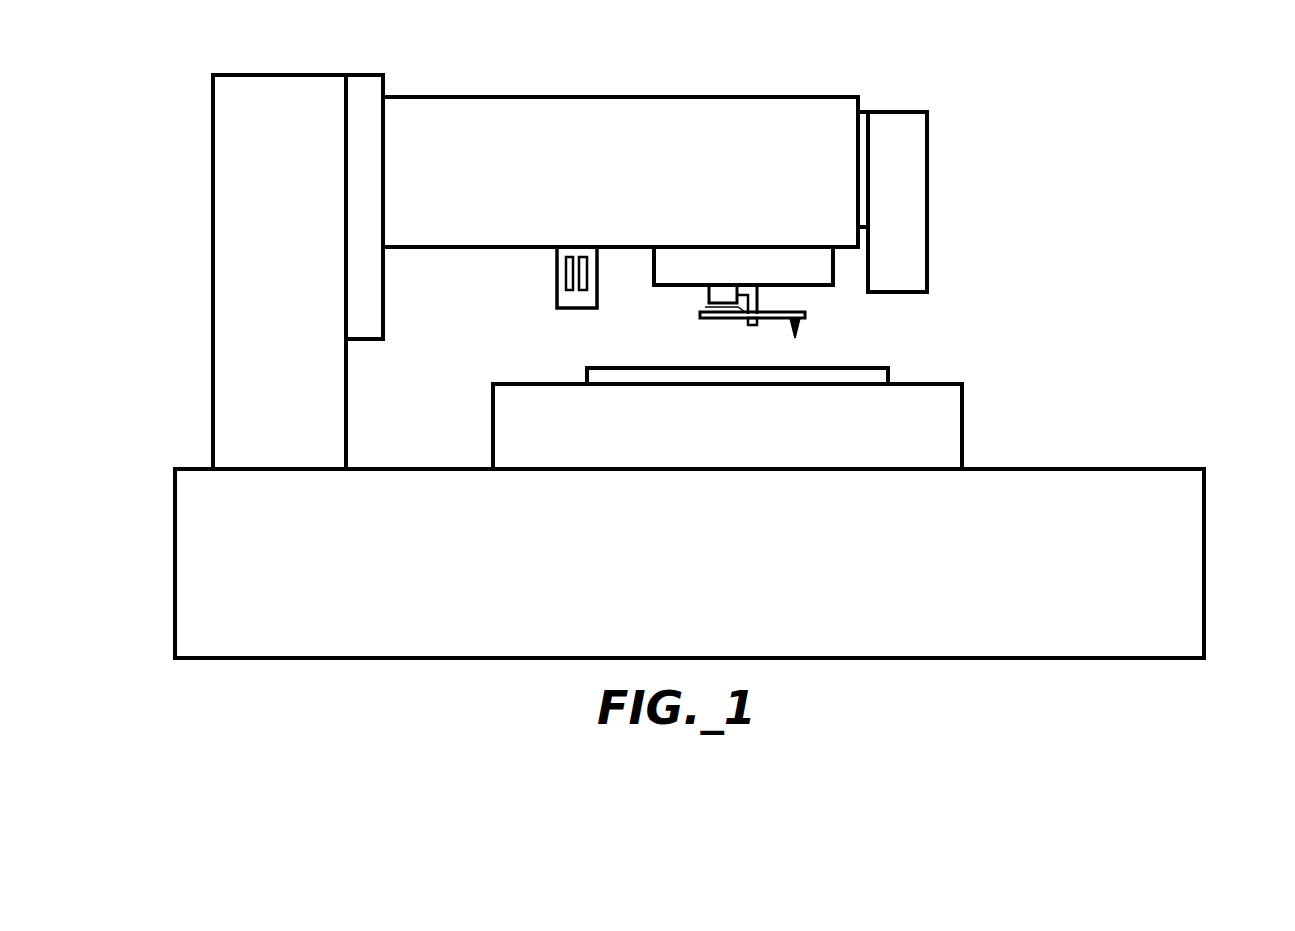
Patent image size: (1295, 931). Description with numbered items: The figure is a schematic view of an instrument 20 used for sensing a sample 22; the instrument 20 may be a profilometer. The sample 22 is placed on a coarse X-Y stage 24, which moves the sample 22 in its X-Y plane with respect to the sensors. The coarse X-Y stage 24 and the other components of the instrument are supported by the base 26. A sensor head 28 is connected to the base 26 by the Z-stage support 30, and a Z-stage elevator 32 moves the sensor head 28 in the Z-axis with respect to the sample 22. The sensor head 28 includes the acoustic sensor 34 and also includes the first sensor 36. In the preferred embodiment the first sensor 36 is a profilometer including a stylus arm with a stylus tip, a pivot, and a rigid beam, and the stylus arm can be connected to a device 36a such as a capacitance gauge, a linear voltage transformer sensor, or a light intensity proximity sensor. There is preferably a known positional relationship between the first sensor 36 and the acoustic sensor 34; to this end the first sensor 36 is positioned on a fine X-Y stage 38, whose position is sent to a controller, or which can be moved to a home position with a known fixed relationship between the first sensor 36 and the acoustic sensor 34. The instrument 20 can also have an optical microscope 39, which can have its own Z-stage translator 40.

The instrument 20 is at (463, 55).
The sample 22 is at (680, 367).
The coarse X-Y stage 24 is at (953, 435).
The base 26 is at (1195, 570).
The sensor head 28 is at (613, 95).
The Z-stage support 30 is at (224, 222).
The Z-stage elevator 32 is at (367, 88).
The acoustic sensor 34 is at (556, 272).
The first sensor 36 is at (822, 290).
The device 36a is at (715, 320).
The fine X-Y stage 38 is at (683, 277).
The optical microscope 39 is at (930, 178).
The Z-stage translator 40 is at (865, 104).